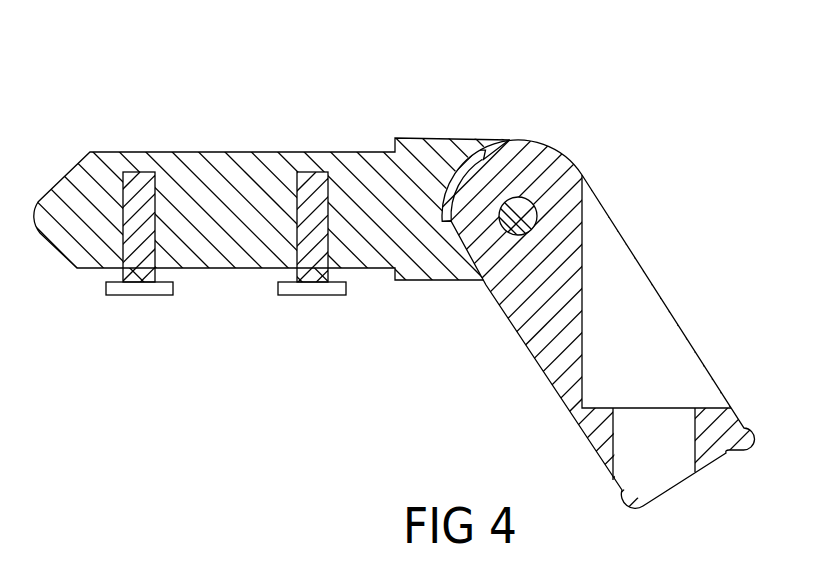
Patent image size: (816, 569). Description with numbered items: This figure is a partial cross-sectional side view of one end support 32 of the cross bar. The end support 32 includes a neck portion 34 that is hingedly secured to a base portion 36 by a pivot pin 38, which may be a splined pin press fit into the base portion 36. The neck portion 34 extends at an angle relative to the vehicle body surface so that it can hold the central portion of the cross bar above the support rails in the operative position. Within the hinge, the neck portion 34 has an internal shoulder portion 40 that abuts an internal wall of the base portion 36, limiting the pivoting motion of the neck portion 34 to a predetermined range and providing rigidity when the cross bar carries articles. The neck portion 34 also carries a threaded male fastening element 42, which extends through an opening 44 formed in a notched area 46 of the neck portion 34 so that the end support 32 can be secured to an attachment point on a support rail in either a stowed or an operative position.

The end support 32 is at (408, 274).
The neck portion 34 is at (428, 301).
The base portion 36 is at (215, 176).
The pivot pin 38 is at (509, 235).
The internal shoulder portion 40 is at (490, 137).
The threaded male fastening element 42 is at (443, 219).
The opening 44 is at (696, 442).
The notched area 46 is at (628, 297).